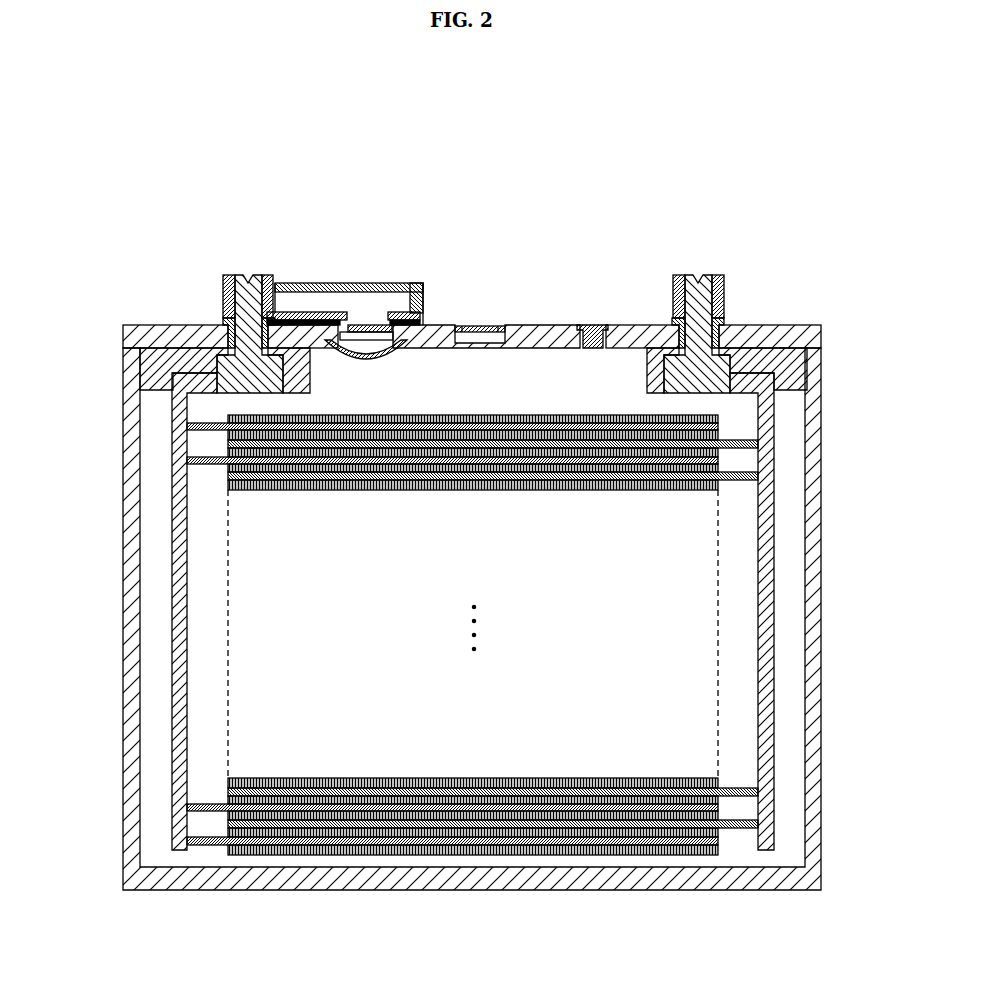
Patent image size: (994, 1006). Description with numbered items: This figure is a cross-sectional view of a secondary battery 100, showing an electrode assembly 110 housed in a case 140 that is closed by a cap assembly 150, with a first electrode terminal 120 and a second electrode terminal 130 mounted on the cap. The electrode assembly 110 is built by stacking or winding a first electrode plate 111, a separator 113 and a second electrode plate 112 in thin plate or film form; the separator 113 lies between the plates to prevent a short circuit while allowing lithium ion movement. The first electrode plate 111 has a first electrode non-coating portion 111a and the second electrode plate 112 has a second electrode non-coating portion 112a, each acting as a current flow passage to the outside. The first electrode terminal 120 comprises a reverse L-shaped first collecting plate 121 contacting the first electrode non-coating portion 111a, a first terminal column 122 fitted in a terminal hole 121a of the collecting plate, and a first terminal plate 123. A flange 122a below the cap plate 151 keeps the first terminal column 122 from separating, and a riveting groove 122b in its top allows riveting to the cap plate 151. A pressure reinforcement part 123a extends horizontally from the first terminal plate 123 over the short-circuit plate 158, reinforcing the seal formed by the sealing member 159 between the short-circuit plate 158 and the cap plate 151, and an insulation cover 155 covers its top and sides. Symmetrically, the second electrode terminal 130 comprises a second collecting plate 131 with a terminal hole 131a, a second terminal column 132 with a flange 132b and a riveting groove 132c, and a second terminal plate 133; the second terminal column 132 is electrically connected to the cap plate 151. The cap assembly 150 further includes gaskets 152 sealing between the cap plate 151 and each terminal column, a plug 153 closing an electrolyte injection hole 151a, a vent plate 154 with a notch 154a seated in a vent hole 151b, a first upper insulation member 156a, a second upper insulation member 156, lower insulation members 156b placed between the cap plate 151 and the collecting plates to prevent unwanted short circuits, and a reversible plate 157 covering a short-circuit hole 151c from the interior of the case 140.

The secondary battery 100 is at (857, 106).
The electrode assembly 110 is at (475, 694).
The first electrode plate 111 is at (343, 850).
The first electrode non-coating portion 111a is at (206, 851).
The second electrode plate 112 is at (637, 850).
The second electrode non-coating portion 112a is at (740, 850).
The separator 113 is at (490, 853).
The first electrode terminal 120 is at (282, 186).
The first collecting plate 121 is at (183, 352).
The terminal hole 121a is at (238, 394).
The first terminal column 122 is at (224, 276).
The flange 122a is at (306, 372).
The riveting groove 122b is at (246, 275).
The first terminal plate 123 is at (273, 276).
The pressure reinforcement part 123a is at (363, 300).
The second electrode terminal 130 is at (788, 188).
The second collecting plate 131 is at (764, 360).
The terminal hole 131a is at (712, 394).
The second terminal column 132 is at (724, 288).
The flange 132b is at (665, 370).
The riveting groove 132c is at (697, 280).
The second terminal plate 133 is at (679, 276).
The case 140 is at (822, 480).
The cap assembly 150 is at (551, 207).
The cap plate 151 is at (540, 325).
The electrolyte injection hole 151a is at (592, 350).
The vent hole 151b is at (472, 350).
The short-circuit hole 151c is at (396, 354).
The gaskets 152 is at (272, 320).
The plug 153 is at (588, 325).
The vent plate 154 is at (497, 325).
The notch 154a is at (474, 325).
The insulation cover 155 is at (398, 292).
The second upper insulation member 156 is at (670, 320).
The first upper insulation member 156a is at (417, 313).
The lower insulation members 156b is at (150, 367).
The reversible plate 157 is at (372, 348).
The short-circuit plate 158 is at (343, 300).
The sealing member 159 is at (423, 323).